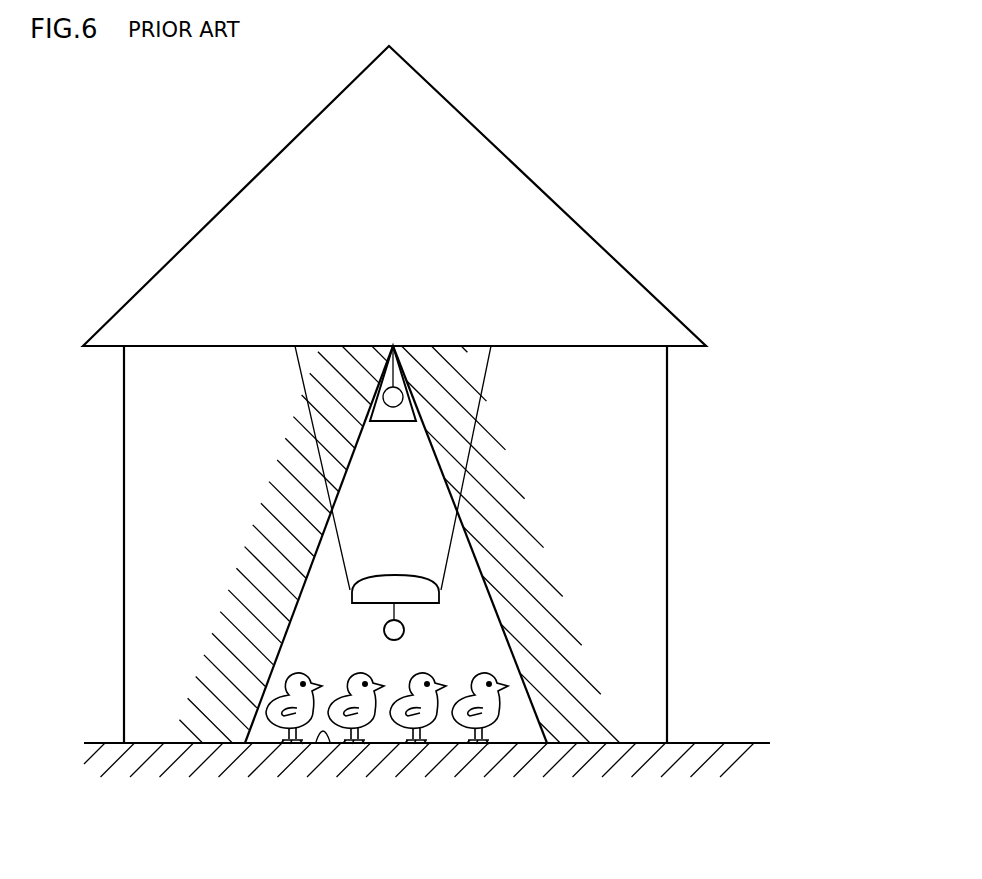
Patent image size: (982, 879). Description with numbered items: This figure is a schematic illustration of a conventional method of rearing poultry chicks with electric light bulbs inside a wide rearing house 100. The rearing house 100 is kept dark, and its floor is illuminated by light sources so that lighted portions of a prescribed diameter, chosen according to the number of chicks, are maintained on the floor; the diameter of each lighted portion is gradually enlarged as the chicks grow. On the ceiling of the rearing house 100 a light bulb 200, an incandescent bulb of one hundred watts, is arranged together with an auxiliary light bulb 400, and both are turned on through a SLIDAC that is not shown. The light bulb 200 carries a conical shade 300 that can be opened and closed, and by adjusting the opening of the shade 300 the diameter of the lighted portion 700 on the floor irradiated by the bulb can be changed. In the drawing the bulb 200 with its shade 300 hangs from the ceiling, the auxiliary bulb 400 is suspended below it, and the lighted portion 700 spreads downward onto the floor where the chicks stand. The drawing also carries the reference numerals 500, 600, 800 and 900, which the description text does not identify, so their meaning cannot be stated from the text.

The rearing house 100 is at (242, 177).
The light bulb 200 is at (405, 378).
The conical shade 300 is at (400, 392).
The auxiliary light bulb 400 is at (392, 628).
The floor 500 is at (314, 745).
The heated region 600 is at (512, 537).
The lighted portion 700 is at (522, 717).
The chicks 800 is at (488, 718).
The lampshade 900 is at (415, 585).